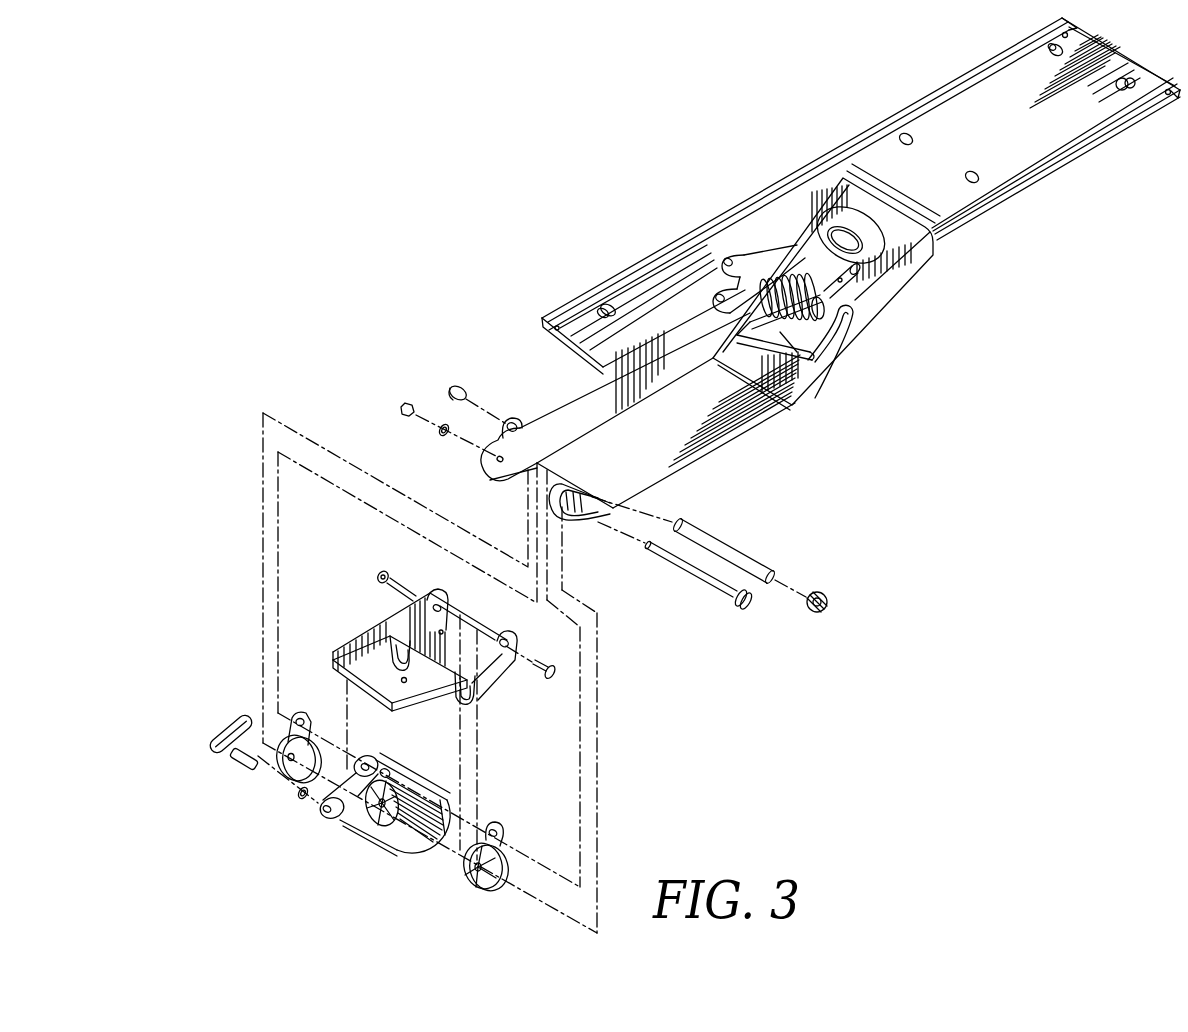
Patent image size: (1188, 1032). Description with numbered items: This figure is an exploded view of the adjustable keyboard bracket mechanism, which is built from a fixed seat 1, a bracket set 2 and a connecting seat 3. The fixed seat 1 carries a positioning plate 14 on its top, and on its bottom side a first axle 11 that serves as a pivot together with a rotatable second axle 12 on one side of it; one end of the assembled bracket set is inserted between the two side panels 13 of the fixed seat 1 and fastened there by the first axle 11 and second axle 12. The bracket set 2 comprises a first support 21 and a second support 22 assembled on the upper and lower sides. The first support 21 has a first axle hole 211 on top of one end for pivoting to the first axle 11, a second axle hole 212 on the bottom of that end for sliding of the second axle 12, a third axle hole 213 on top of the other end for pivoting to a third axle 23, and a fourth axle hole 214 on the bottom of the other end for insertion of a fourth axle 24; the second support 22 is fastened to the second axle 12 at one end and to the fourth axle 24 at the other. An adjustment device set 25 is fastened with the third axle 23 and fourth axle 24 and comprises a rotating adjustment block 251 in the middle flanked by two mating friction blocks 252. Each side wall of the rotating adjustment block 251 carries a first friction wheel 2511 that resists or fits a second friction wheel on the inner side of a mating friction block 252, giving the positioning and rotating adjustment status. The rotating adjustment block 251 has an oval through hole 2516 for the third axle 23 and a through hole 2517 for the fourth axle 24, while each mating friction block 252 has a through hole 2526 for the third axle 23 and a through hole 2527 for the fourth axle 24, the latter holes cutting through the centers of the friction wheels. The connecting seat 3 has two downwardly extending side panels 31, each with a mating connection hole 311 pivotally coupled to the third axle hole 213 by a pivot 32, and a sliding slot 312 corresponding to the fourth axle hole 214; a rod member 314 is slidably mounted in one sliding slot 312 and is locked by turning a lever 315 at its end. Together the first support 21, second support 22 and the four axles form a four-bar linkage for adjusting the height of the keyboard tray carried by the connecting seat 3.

The fixed seat 1 is at (861, 196).
The first axle 11 is at (725, 259).
The second axle 12 is at (717, 295).
The side panels 13 is at (911, 264).
The positioning plate 14 is at (900, 113).
The bracket set 2 is at (497, 288).
The first support 21 is at (717, 274).
The first axle hole 211 is at (726, 225).
The second axle hole 212 is at (813, 350).
The third axle hole 213 is at (511, 422).
The fourth axle hole 214 is at (583, 515).
The second support 22 is at (600, 410).
The third axle 23 is at (723, 550).
The fourth axle 24 is at (687, 567).
The adjustment device set 25 is at (327, 823).
The rotating adjustment block 251 is at (383, 823).
The first friction wheel 2511 is at (410, 845).
The through hole 2516 is at (390, 772).
The through hole 2517 is at (370, 823).
The mating friction block 252 is at (477, 860).
The through hole 2526 is at (492, 827).
The through hole 2527 is at (505, 900).
The connecting seat 3 is at (463, 611).
The side panel 31 is at (430, 649).
The mating connection hole 311 is at (505, 641).
The sliding slot 312 is at (403, 643).
The rod member 314 is at (247, 766).
The lever 315 is at (240, 720).
The pivot 32 is at (387, 575).